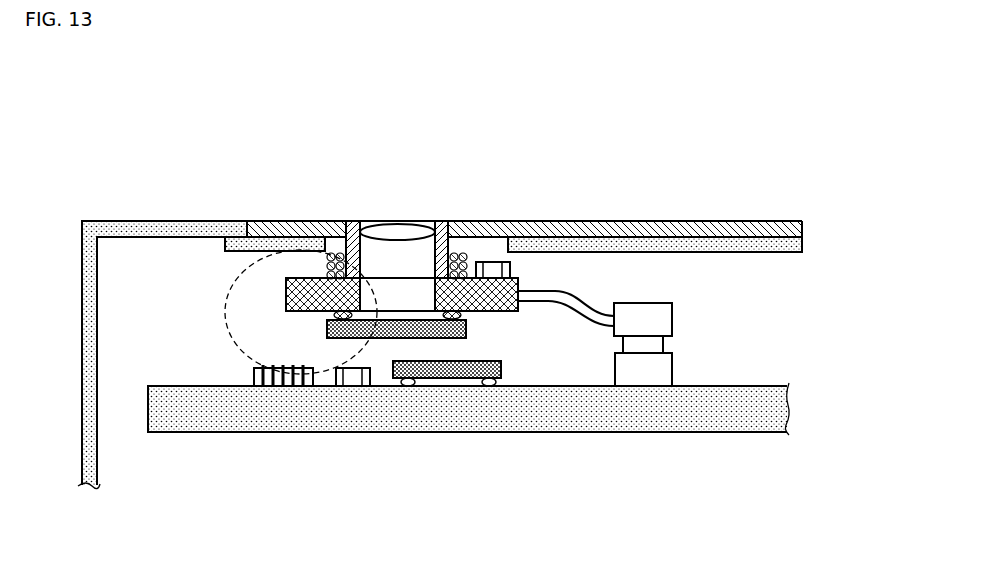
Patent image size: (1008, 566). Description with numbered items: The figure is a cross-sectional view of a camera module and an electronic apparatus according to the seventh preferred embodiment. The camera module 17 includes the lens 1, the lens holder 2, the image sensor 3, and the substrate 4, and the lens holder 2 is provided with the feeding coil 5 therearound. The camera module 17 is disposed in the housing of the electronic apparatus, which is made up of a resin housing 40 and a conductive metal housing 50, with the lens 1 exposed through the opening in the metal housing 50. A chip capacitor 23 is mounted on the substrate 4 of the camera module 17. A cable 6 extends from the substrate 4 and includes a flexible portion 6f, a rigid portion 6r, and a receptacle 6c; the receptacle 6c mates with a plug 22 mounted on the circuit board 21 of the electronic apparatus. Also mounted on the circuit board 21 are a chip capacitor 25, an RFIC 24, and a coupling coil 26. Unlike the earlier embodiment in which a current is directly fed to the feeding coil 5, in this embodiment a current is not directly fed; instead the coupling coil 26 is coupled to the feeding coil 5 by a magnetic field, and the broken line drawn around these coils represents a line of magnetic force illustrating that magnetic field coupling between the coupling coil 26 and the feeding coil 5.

The lens 1 is at (398, 228).
The lens holder 2 is at (441, 232).
The image sensor 3 is at (468, 331).
The substrate 4 is at (286, 300).
The feeding coil 5 is at (465, 251).
The cable 6 is at (633, 318).
The flexible portion 6f is at (577, 302).
The rigid portion 6r is at (664, 320).
The receptacle 6c is at (674, 346).
The camera module 17 is at (268, 276).
The circuit board 21 is at (760, 400).
The plug 22 is at (669, 371).
The chip capacitor 23 is at (511, 274).
The RFIC 24 is at (503, 369).
The chip capacitor 25 is at (345, 367).
The coupling coil 26 is at (273, 358).
The resin housing 40 is at (170, 226).
The metal housing 50 is at (610, 228).